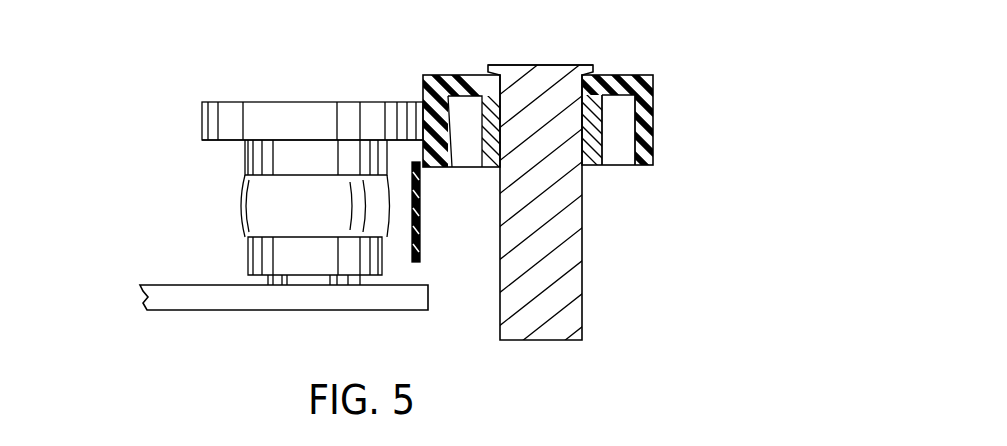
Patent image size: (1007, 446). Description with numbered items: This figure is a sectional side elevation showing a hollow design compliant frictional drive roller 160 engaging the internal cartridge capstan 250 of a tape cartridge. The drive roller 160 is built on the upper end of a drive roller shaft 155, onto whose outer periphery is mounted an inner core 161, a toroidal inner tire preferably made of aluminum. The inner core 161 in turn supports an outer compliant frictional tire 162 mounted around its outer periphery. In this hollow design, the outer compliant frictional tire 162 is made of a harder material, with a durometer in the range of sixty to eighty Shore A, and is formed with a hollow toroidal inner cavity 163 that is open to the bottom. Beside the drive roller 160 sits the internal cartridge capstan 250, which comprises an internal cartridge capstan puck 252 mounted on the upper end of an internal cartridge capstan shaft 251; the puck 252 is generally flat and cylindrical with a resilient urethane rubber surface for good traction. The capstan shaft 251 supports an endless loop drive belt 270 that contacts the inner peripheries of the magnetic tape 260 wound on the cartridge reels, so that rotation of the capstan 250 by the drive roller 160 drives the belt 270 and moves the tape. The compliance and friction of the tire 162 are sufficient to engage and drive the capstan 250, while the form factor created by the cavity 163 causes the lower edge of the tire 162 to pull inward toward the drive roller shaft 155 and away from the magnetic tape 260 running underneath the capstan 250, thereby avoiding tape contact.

The drive roller shaft 155 is at (583, 302).
The compliant frictional drive roller 160 is at (653, 105).
The inner core 161 is at (572, 65).
The outer compliant frictional tire 162 is at (641, 165).
The hollow toroidal inner cavity 163 is at (617, 160).
The internal cartridge capstan 250 is at (258, 112).
The internal cartridge capstan shaft 251 is at (241, 222).
The internal cartridge capstan puck 252 is at (231, 141).
The magnetic tape 260 is at (419, 232).
The endless loop drive belt 270 is at (238, 298).